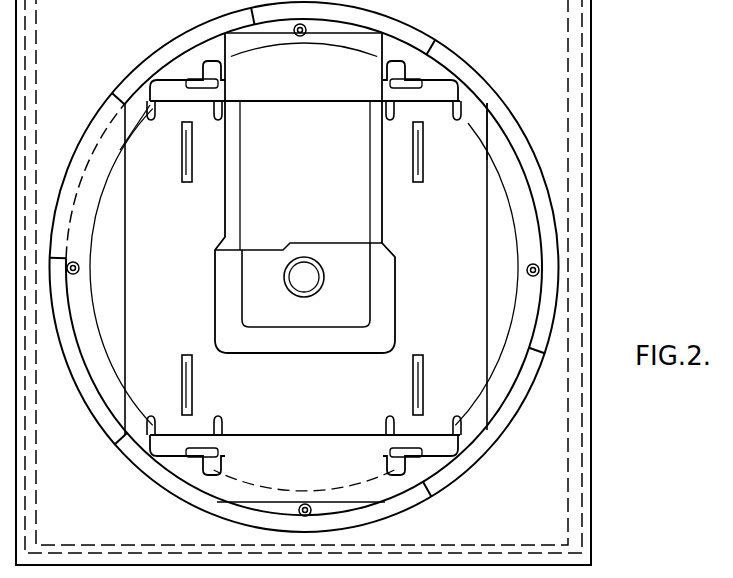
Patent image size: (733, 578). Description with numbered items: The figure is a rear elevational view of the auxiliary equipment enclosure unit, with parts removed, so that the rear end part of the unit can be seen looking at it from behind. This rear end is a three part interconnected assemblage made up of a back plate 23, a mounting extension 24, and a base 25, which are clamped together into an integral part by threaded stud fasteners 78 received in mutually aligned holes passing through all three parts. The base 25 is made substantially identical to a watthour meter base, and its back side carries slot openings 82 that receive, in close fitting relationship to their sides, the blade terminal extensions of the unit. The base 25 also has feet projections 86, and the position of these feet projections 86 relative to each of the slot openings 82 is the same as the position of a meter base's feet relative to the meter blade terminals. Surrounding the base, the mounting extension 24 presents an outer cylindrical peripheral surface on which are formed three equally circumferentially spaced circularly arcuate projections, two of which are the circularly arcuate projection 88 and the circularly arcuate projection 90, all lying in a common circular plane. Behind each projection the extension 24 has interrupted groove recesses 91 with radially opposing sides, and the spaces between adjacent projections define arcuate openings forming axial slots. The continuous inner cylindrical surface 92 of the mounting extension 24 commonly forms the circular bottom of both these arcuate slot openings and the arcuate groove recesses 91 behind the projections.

The back plate 23 is at (591, 110).
The mounting extension 24 is at (434, 41).
The base 25 is at (200, 471).
The threaded stud fasteners 78 is at (80, 274).
The slot openings 82 is at (188, 162).
The feet projections 86 is at (380, 83).
The circularly arcuate projection 88 is at (486, 95).
The circularly arcuate projection 90 is at (238, 519).
The interrupted groove recesses 91 is at (153, 62).
The continuous inner cylindrical surface 92 is at (382, 18).